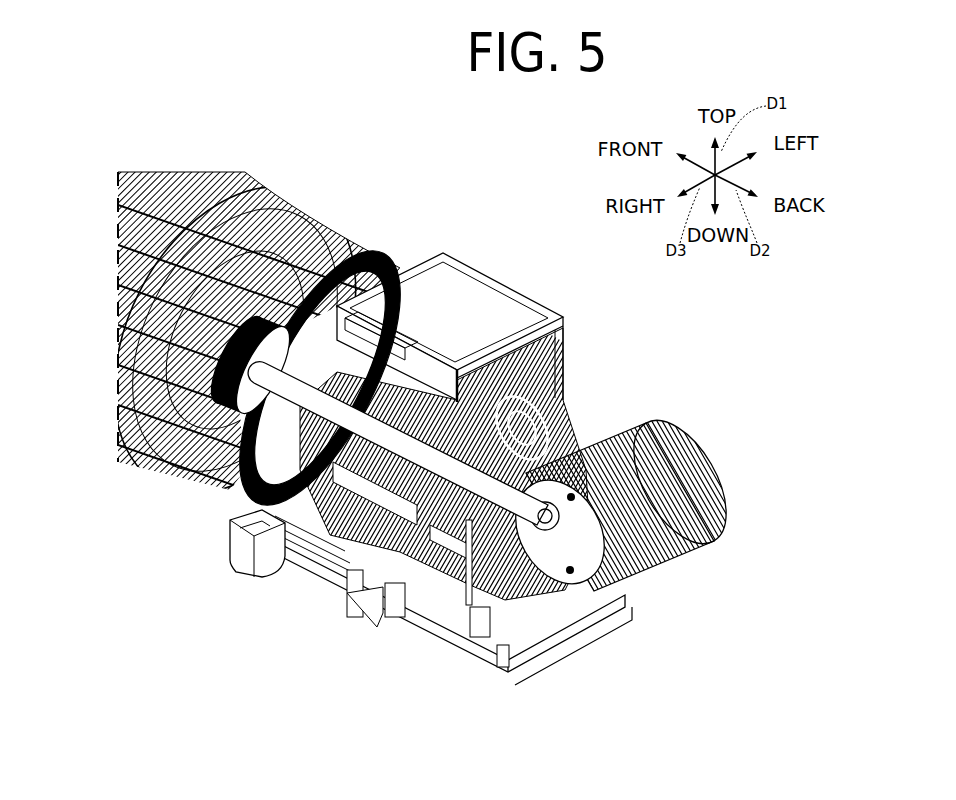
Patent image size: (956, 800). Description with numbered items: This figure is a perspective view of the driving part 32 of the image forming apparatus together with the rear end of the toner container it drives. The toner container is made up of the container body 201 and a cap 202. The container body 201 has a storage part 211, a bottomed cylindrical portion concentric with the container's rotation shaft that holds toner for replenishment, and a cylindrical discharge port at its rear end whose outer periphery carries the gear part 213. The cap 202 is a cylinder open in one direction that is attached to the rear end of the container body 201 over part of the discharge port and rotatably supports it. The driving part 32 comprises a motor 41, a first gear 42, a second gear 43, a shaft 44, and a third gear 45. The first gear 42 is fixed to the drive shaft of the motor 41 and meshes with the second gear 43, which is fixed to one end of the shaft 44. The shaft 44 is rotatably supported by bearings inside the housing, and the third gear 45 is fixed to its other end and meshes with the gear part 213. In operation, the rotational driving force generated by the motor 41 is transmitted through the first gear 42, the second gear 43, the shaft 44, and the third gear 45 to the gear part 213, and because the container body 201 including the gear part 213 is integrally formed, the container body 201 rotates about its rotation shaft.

The container body 201 is at (354, 395).
The storage part 211 is at (287, 203).
The gear part 213 is at (390, 262).
The cap 202 is at (458, 287).
The driving part 32 is at (489, 533).
The motor 41 is at (667, 553).
The first gear 42 is at (575, 652).
The second gear 43 is at (612, 600).
The shaft 44 is at (392, 436).
The third gear 45 is at (215, 420).